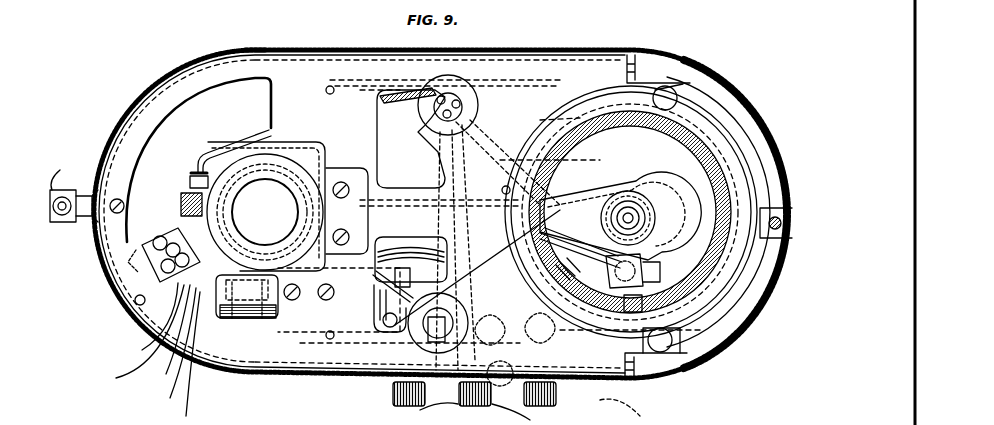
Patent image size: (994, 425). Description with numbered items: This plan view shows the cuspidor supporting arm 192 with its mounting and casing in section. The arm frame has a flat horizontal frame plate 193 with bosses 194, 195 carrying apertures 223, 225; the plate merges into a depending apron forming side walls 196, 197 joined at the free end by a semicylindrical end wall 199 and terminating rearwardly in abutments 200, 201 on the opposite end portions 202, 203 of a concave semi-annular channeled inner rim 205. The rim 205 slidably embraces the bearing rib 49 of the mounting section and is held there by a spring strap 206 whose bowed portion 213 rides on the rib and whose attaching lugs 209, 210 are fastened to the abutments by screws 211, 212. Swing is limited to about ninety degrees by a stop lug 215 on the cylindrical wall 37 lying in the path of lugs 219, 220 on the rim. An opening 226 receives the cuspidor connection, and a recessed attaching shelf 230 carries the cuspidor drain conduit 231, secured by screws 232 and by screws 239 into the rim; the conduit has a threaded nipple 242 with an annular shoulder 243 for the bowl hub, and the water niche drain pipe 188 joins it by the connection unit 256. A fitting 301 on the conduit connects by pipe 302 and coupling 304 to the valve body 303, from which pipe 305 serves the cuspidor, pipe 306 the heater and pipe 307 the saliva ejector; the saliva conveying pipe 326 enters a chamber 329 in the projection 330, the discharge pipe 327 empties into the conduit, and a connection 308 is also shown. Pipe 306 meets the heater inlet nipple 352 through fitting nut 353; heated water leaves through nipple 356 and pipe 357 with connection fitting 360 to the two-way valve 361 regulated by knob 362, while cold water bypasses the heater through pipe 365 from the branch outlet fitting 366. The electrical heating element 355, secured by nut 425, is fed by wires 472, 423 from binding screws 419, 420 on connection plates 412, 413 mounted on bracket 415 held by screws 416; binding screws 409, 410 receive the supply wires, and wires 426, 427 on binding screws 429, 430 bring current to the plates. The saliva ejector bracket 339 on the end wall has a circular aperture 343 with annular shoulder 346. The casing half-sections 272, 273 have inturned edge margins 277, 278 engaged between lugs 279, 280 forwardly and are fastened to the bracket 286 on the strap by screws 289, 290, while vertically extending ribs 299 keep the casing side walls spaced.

The cuspidor supporting arm 192 is at (184, 56).
The vertically extending ribs 299 is at (253, 46).
The casing half-section 273 is at (275, 47).
The side wall 197 is at (330, 55).
The abutment 201 is at (630, 56).
The attaching lug 210 is at (652, 58).
The screw 212 is at (692, 74).
The strap 206 is at (676, 92).
The end portion 203 is at (722, 95).
The bearing rib 49 is at (722, 152).
The channeled inner rim 205 is at (580, 125).
The cylindrical wall 37 is at (566, 150).
The connection unit 256 is at (626, 204).
The lug 220 is at (620, 214).
The stop lug 215 is at (557, 214).
The aperture 223 is at (600, 254).
The water niche drain pipe 188 is at (652, 218).
The pipe 302 is at (660, 250).
The fitting 301 is at (646, 280).
The boss 194 is at (576, 281).
The lug 219 is at (634, 290).
The screw 290 is at (792, 208).
The screw 289 is at (782, 240).
The bracket 286 is at (776, 275).
The bowed portion 213 is at (740, 322).
The end portion 202 is at (700, 352).
The attaching lug 209 is at (642, 382).
The screw 211 is at (688, 378).
The abutment 200 is at (622, 385).
The aperture 225 is at (458, 97).
The boss 195 is at (479, 105).
The frame plate 193 is at (470, 121).
The pipe 307 is at (466, 150).
The screws 239 is at (500, 190).
The pipe 305 is at (436, 162).
The discharge pipe 327 is at (440, 190).
The branch outlet fitting 366 is at (400, 220).
The opening 226 is at (150, 130).
The saliva conveying pipe 326 is at (245, 146).
The nipple 242 is at (276, 132).
The annular shoulder 243 is at (218, 156).
The chamber 329 is at (192, 170).
The nut 278 is at (188, 178).
The projection 330 is at (180, 202).
The binding screw 430 is at (265, 212).
The wire 427 is at (263, 201).
The wire 426 is at (250, 216).
The binding screw 429 is at (256, 229).
The cuspidor drain conduit 231 is at (300, 172).
The attaching shelf 230 is at (345, 182).
The screws 232 is at (350, 166).
The circular aperture 343 is at (60, 196).
The annular shoulder 346 is at (92, 218).
The saliva ejector bracket 339 is at (60, 168).
The lug 280 is at (96, 185).
The inturned edge margin 277 is at (165, 217).
The binding screw 410 is at (175, 242).
The connection plate 413 is at (128, 262).
The lug 279 is at (104, 246).
The binding screw 420 is at (112, 270).
The screws 416 is at (134, 300).
The semicylindrical end wall 199 is at (142, 305).
The binding screw 409 is at (147, 319).
The binding screw 419 is at (136, 333).
The connection plate 412 is at (165, 333).
The bracket 415 is at (171, 346).
The nut 425 is at (183, 357).
The electrical heating element 355 is at (212, 360).
The coil 472 is at (247, 296).
The wire 423 is at (247, 288).
The pipe 365 is at (374, 290).
The nipple 356 is at (382, 322).
The connection fitting 360 is at (385, 346).
The inlet nipple 352 is at (402, 256).
The connection fitting nut 353 is at (434, 248).
The pipe 306 is at (442, 262).
The pipe 357 is at (452, 294).
The valve 361 is at (380, 374).
The controlling knob 362 is at (392, 396).
The valve body 303 is at (560, 388).
The coupling 304 is at (528, 414).
The cable 308 is at (627, 412).
The casing half-section 272 is at (276, 377).
The side wall 196 is at (333, 377).